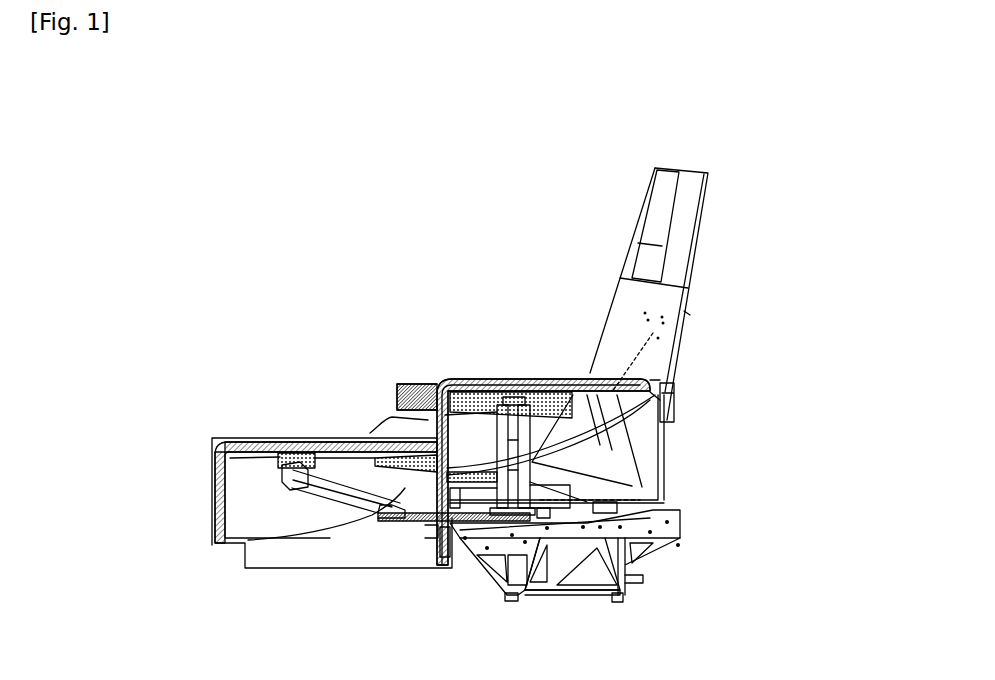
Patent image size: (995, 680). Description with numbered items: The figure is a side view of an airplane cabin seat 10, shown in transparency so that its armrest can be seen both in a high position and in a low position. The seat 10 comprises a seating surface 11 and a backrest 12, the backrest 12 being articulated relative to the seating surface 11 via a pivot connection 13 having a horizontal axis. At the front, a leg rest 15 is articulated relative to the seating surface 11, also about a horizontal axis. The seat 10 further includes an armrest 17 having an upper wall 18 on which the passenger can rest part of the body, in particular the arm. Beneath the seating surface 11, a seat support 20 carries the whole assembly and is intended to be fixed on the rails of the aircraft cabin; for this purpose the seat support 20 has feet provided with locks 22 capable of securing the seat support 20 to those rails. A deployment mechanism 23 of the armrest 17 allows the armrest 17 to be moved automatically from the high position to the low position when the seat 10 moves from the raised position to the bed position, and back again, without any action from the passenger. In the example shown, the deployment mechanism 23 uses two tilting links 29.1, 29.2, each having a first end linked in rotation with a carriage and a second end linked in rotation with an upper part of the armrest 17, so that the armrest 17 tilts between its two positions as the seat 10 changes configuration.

The seat 10 is at (255, 158).
The seating surface 11 is at (383, 440).
The backrest 12 is at (663, 298).
The pivot connection 13 is at (590, 505).
The leg rest 15 is at (363, 430).
The armrest 17 is at (556, 380).
The upper wall 18 is at (497, 380).
The seat support 20 is at (683, 515).
The locks 22 is at (517, 598).
The deployment mechanism 23 is at (440, 380).
The tilting link 29.1 is at (480, 440).
The tilting link 29.2 is at (545, 380).